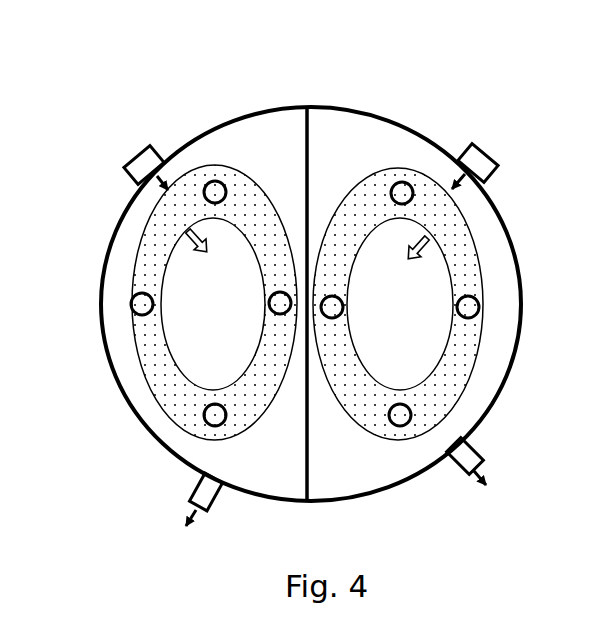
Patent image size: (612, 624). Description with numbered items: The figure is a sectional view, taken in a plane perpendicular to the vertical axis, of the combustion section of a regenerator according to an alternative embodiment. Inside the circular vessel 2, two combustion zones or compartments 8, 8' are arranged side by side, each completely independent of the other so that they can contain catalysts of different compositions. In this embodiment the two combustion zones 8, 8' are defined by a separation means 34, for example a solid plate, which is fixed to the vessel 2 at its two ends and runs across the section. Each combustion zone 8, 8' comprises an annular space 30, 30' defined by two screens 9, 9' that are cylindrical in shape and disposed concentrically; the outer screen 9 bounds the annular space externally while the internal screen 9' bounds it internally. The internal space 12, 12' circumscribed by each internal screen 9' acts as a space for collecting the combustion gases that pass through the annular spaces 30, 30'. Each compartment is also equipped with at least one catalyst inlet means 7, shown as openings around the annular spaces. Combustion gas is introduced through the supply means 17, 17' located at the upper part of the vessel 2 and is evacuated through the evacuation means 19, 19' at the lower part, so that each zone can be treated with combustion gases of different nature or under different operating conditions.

The vessel 2 is at (372, 114).
The separation means 34 is at (308, 428).
The annular space 30 is at (214, 302).
The annular space 30' is at (398, 304).
The combustion zone 8 is at (163, 302).
The combustion zone 8' is at (437, 304).
The internal space 12 is at (213, 304).
The internal space 12' is at (400, 304).
The catalyst inlet means 7 is at (215, 180).
The screen 9 is at (305, 148).
The internal screen 9' is at (294, 284).
The means for supplying combustion gas 17 is at (146, 138).
The means for supplying combustion gas 17' is at (469, 137).
The means for evacuating combustion gas 19 is at (234, 509).
The means for evacuating combustion gas 19' is at (504, 456).